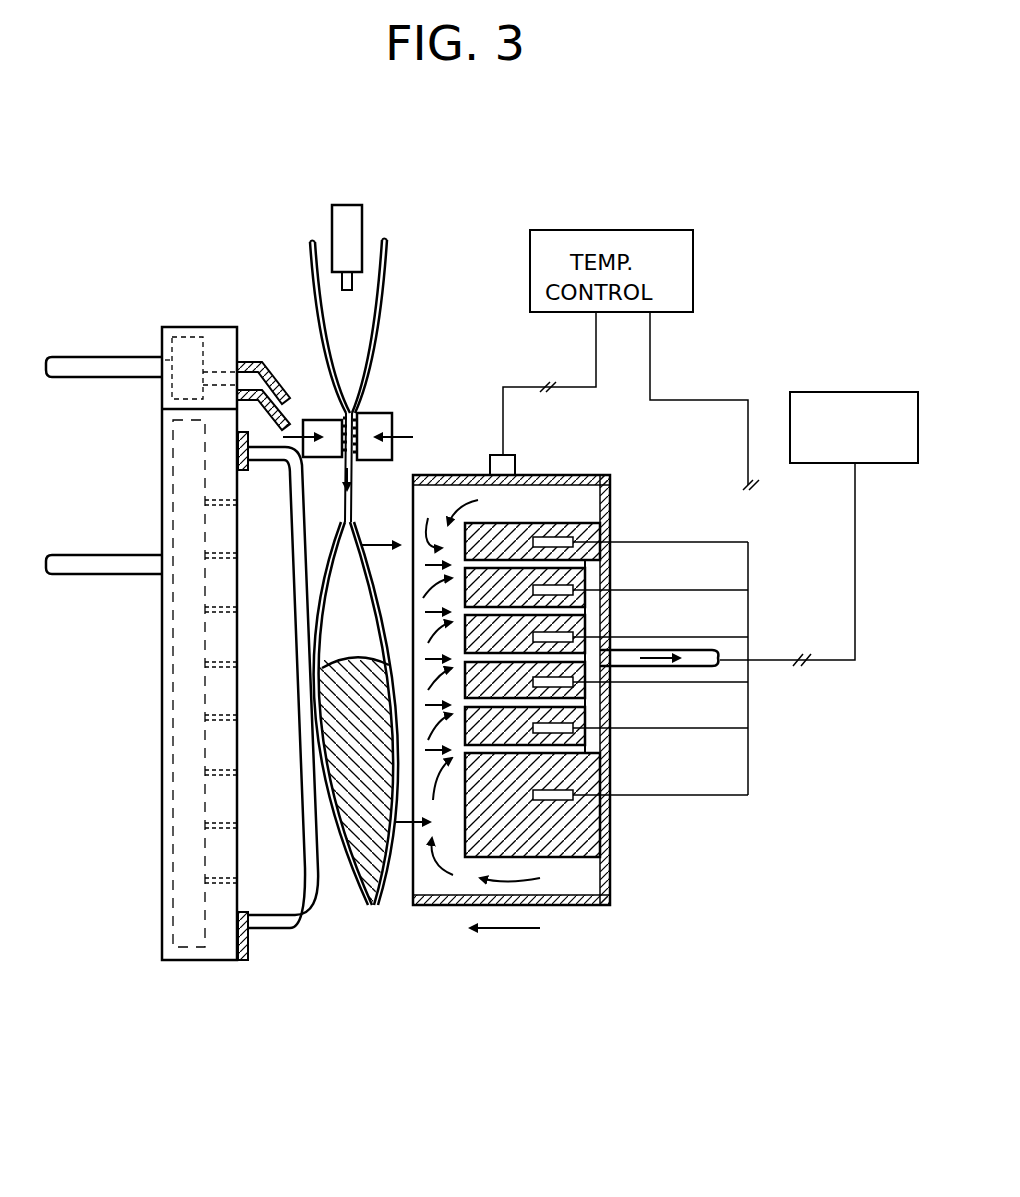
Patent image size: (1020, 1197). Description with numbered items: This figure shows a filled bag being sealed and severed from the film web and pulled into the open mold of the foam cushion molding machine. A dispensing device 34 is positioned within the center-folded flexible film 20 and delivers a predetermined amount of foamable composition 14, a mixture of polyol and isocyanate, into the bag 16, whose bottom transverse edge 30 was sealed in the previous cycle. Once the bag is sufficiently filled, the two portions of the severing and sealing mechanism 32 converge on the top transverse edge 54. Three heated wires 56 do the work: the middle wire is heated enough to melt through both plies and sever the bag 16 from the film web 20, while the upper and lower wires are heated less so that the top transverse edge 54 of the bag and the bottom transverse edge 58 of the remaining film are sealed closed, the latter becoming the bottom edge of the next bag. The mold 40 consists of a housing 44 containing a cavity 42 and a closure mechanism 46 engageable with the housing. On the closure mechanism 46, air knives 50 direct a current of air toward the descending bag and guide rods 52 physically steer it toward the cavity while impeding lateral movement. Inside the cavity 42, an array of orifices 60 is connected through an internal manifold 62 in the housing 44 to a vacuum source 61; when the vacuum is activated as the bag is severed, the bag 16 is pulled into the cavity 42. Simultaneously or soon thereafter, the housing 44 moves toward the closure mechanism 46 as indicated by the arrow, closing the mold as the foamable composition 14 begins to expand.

The foamable composition 14 is at (377, 768).
The flexible bag 16 is at (382, 860).
The flexible film 20 is at (385, 282).
The bottom transverse edge 30 is at (368, 900).
The severing and sealing mechanism 32 is at (325, 420).
The dispensing device 34 is at (352, 222).
The mold 40 is at (466, 992).
The cavity 42 is at (565, 880).
The housing 44 is at (612, 878).
The closure mechanism 46 is at (160, 858).
The air knives 50 is at (268, 356).
The guide rods 52 is at (283, 935).
The top transverse edge 54 is at (342, 500).
The heated wires 56 is at (360, 403).
The bottom transverse edge of the film 58 is at (352, 430).
The orifices 60 is at (512, 565).
The vacuum source 61 is at (846, 392).
The internal manifold 62 is at (592, 648).